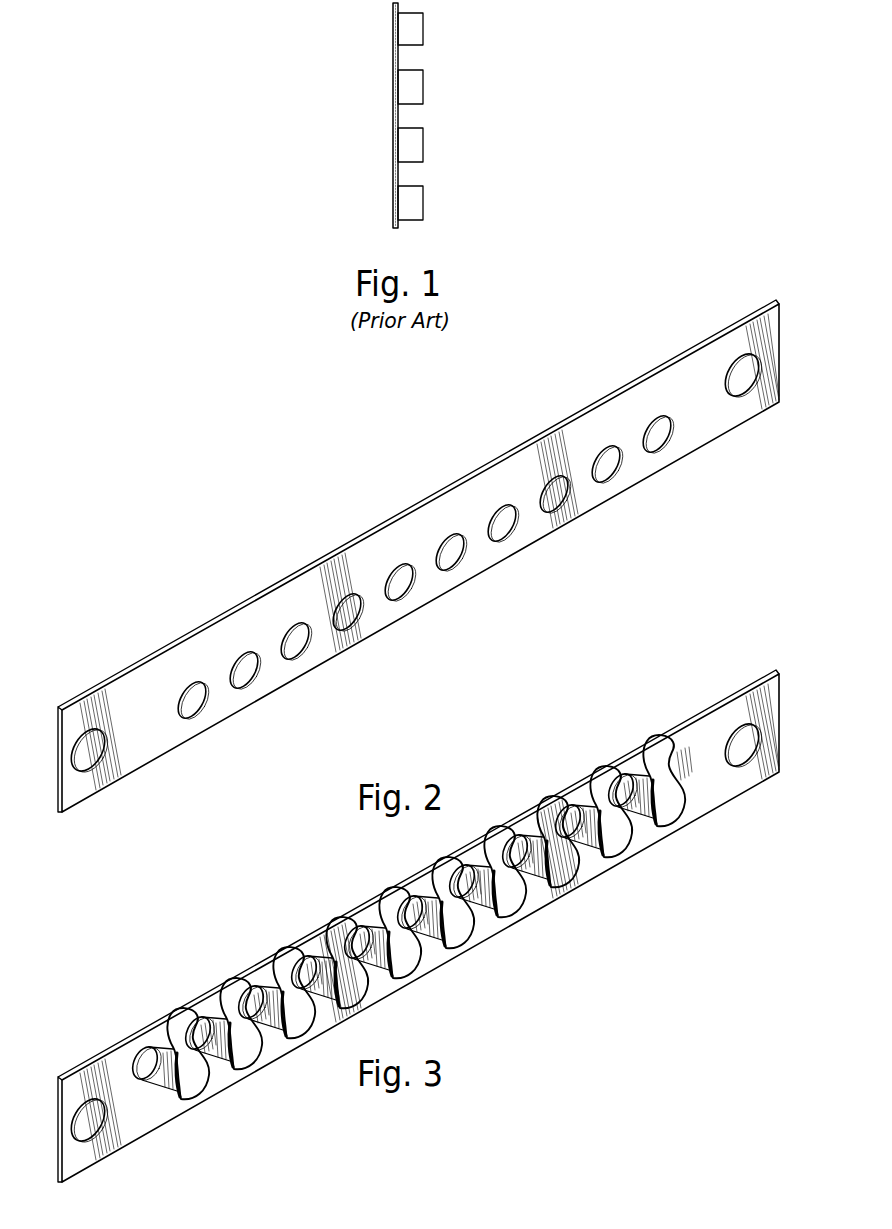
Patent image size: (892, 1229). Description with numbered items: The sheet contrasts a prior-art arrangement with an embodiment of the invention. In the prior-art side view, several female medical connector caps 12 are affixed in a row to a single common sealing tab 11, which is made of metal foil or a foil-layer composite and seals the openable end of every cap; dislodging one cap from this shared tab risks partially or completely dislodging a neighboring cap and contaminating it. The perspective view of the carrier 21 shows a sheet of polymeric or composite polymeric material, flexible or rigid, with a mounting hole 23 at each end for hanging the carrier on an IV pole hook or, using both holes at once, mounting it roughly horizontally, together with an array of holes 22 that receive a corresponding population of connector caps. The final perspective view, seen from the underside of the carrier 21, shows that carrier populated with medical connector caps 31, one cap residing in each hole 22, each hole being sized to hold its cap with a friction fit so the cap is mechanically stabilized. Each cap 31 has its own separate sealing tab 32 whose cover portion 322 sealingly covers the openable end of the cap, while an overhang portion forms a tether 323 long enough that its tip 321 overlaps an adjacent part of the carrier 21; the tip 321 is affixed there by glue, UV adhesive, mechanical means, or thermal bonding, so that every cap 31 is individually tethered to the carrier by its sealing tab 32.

In FIG. 1, the sealing tab 11 is at (393, 10).
In FIG. 1, the female medical connector caps 12 is at (422, 27).
In FIG. 2, the carrier 21 is at (690, 362).
In FIG. 3, the carrier 21 is at (692, 757).
In FIG. 2, the holes 22 is at (555, 498).
In FIG. 2, the mounting hole 23 is at (740, 376).
In FIG. 3, the mounting hole 23 is at (742, 760).
In FIG. 3, the medical connector cap 31 is at (150, 1045).
In FIG. 3, the sealing tab 32 is at (220, 1071).
In FIG. 3, the tip 321 is at (197, 1017).
In FIG. 3, the cover portion 322 is at (207, 1080).
In FIG. 3, the tether 323 is at (195, 1047).